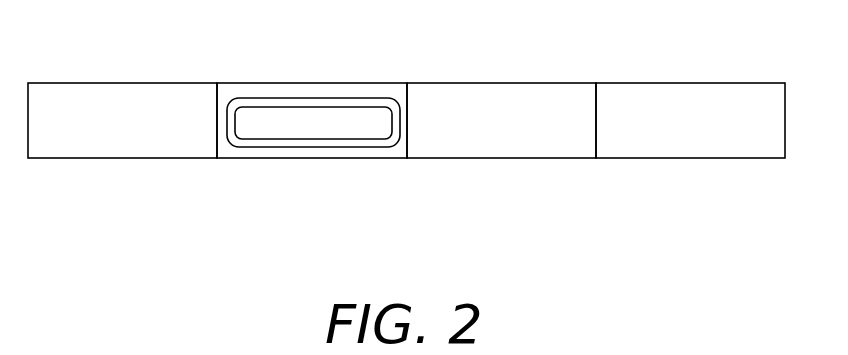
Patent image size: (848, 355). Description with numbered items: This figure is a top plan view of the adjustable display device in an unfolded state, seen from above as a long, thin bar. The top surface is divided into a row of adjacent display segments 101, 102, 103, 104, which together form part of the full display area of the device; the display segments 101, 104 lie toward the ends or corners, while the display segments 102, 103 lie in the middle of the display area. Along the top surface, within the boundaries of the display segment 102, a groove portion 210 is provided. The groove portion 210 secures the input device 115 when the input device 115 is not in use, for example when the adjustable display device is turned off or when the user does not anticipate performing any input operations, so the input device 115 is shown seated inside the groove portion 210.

The display segment 101 is at (105, 83).
The display segment 102 is at (340, 83).
The display segment 103 is at (540, 83).
The display segment 104 is at (722, 83).
The groove portion 210 is at (307, 148).
The input device 115 is at (361, 140).